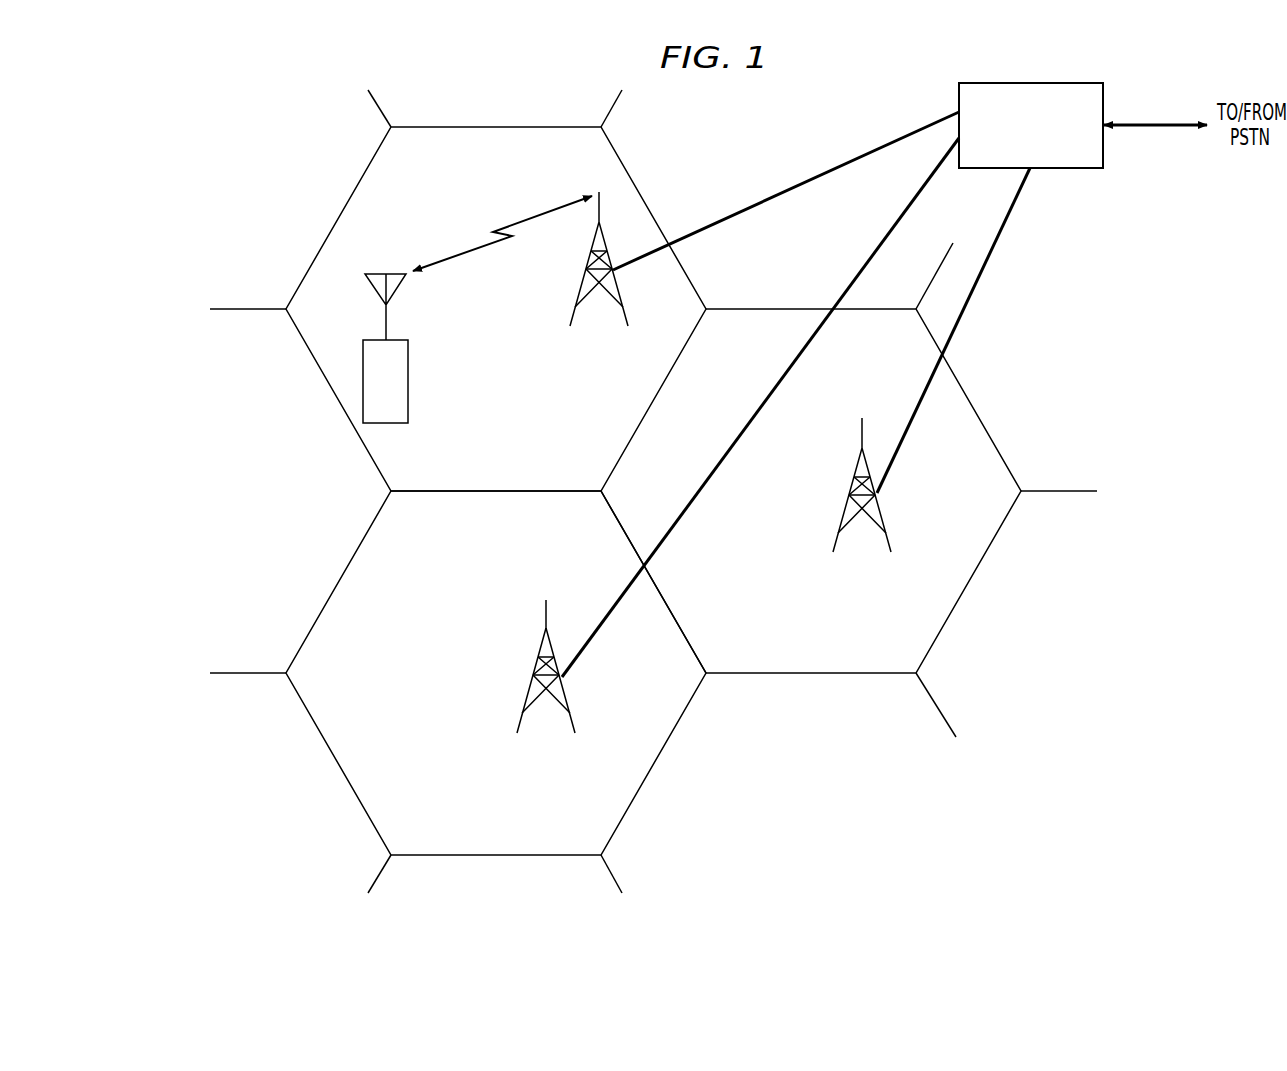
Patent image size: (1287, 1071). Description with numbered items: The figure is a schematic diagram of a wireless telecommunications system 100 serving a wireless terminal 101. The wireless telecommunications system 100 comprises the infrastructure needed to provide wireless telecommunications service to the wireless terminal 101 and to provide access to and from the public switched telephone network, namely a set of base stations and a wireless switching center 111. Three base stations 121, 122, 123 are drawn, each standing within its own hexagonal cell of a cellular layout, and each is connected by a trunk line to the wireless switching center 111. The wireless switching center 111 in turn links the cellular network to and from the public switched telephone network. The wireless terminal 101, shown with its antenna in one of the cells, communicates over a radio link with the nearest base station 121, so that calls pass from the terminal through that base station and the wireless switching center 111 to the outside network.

The wireless telecommunications system 100 is at (252, 142).
The wireless terminal 101 is at (408, 385).
The wireless switching center 111 is at (1066, 168).
The base station 121 is at (582, 294).
The base station 122 is at (528, 705).
The base station 123 is at (843, 518).